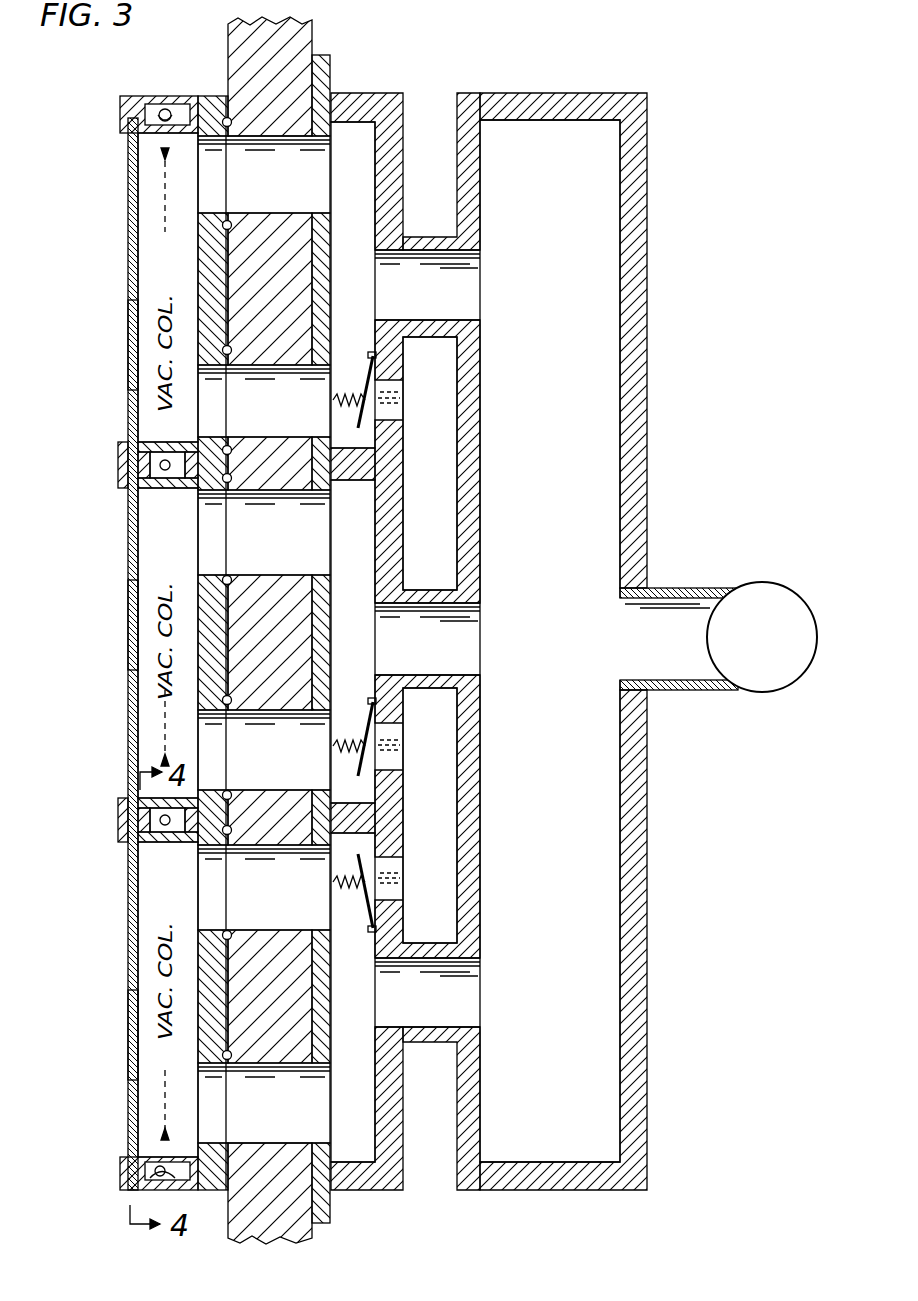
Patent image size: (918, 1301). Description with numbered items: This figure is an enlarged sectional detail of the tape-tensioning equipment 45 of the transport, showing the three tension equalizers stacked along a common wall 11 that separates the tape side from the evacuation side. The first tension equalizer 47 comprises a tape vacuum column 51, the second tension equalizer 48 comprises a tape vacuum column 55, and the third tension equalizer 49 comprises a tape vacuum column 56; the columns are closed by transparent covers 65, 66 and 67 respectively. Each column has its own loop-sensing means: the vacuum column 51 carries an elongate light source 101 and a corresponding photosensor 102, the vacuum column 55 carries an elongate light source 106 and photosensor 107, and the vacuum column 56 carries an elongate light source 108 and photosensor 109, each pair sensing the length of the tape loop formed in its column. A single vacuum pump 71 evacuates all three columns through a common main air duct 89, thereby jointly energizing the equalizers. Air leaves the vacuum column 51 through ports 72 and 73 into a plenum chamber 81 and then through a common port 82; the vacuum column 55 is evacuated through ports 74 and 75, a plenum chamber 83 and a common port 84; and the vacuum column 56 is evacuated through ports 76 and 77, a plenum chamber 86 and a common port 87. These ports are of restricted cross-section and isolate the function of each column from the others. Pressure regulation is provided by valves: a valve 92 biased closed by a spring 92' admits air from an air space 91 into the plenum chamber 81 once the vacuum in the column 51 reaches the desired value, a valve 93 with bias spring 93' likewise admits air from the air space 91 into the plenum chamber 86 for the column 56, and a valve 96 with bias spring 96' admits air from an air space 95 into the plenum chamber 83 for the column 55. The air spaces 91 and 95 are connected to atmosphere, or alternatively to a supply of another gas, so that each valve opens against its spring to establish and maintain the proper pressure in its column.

The shaft 11 is at (313, 44).
The equipment for applying recording tape at controlled tension 45 is at (126, 716).
The first tension equalizer 47 is at (132, 930).
The second tension equalizer 48 is at (160, 262).
The third tension equalizer 49 is at (150, 560).
The tape vacuum column 51 is at (181, 902).
The tape vacuum column 55 is at (181, 424).
The tape vacuum column 56 is at (181, 534).
The transparent cover 65 is at (132, 1032).
The transparent cover 66 is at (132, 622).
The transparent cover 67 is at (132, 343).
The vacuum pump 71 is at (750, 586).
The port 72 is at (276, 1126).
The port 73 is at (276, 914).
The port 74 is at (278, 416).
The port 75 is at (278, 197).
The port 76 is at (276, 774).
The port 77 is at (278, 547).
The plenum chamber 81 is at (368, 1165).
The common port 82 is at (431, 1006).
The plenum chamber 83 is at (372, 130).
The common port 84 is at (431, 304).
The plenum chamber 86 is at (368, 594).
The common port 87 is at (426, 664).
The main air duct 89 is at (544, 587).
The air space 91 is at (442, 924).
The valve 92 is at (367, 885).
The spring 92' is at (351, 901).
The valve 93 is at (369, 750).
The bias spring 93' is at (318, 738).
The air space 95 is at (442, 556).
The valve 96 is at (400, 390).
The bias spring 96' is at (389, 374).
The elongate light source 101 is at (135, 1181).
The photosensor 102 is at (162, 845).
The elongate light source 106 is at (188, 106).
The photosensor 107 is at (152, 450).
The elongate light source 108 is at (140, 808).
The photosensor 109 is at (155, 488).